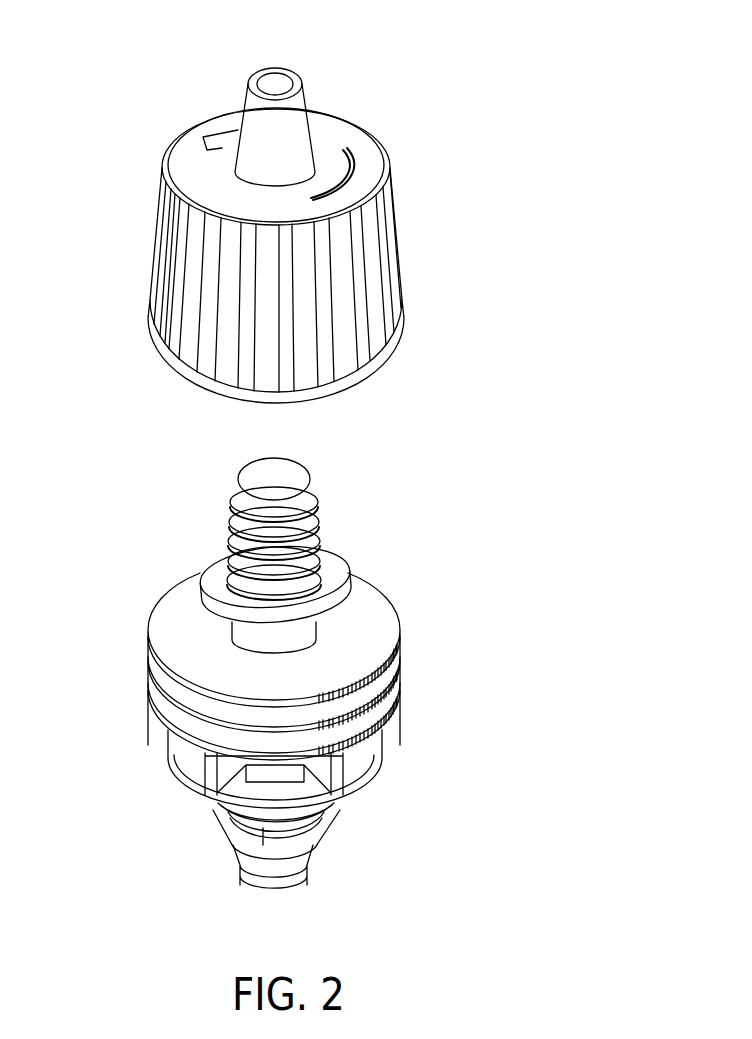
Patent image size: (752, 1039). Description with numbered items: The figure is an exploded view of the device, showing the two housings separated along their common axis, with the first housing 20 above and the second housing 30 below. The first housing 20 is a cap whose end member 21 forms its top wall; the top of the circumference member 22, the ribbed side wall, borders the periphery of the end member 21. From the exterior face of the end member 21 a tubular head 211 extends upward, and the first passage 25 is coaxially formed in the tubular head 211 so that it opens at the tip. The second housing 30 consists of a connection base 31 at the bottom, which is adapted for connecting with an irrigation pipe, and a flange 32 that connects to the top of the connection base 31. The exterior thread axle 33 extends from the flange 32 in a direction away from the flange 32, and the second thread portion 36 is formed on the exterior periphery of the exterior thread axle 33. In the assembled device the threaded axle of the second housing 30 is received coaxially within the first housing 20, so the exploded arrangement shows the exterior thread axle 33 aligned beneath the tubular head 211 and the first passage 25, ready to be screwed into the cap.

The first housing 20 is at (268, 202).
The end member 21 is at (192, 163).
The tubular head 211 is at (262, 110).
The first passage 25 is at (275, 82).
The circumference member 22 is at (182, 238).
The second housing 30 is at (257, 670).
The connection base 31 is at (132, 603).
The flange 32 is at (210, 575).
The exterior thread axle 33 is at (262, 478).
The second thread portion 36 is at (318, 528).